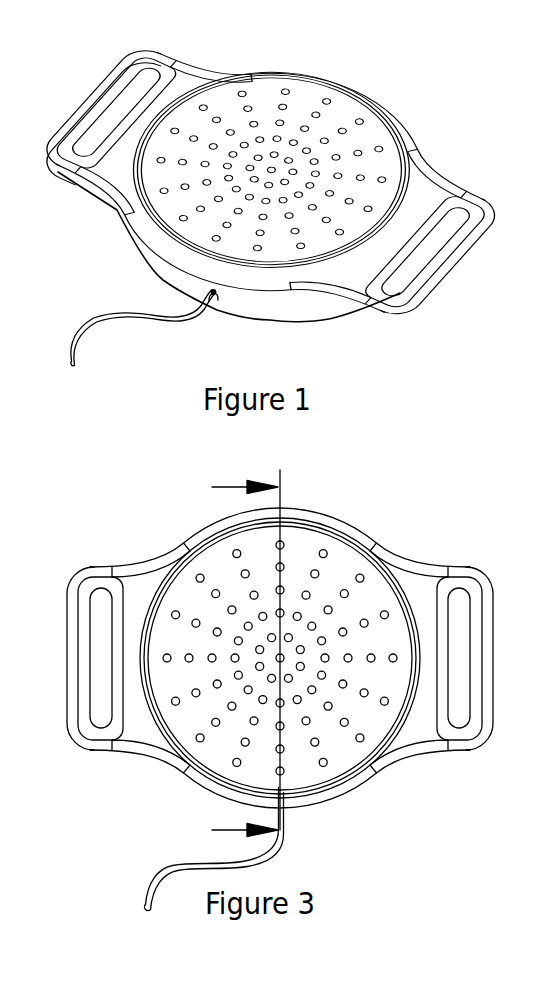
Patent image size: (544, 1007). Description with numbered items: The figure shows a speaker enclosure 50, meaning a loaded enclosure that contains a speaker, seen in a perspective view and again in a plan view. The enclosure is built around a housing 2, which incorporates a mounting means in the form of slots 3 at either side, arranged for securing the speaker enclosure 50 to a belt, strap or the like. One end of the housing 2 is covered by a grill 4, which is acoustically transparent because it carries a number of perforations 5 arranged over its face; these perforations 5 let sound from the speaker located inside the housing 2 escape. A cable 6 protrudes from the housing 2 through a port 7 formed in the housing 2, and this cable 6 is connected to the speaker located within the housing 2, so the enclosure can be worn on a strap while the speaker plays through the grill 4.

In FIG. 1, the speaker enclosure 50 is at (434, 112).
In FIG. 3, the speaker enclosure 50 is at (94, 517).
In FIG. 1, the housing 2 is at (418, 192).
In FIG. 1, the slots 3 is at (137, 95).
In FIG. 3, the slots 3 is at (457, 602).
In FIG. 1, the grill 4 is at (263, 95).
In FIG. 3, the grill 4 is at (345, 760).
In FIG. 1, the perforations 5 is at (330, 100).
In FIG. 3, the perforations 5 is at (382, 613).
In FIG. 1, the cable 6 is at (118, 323).
In FIG. 3, the cable 6 is at (172, 866).
In FIG. 1, the port 7 is at (215, 302).